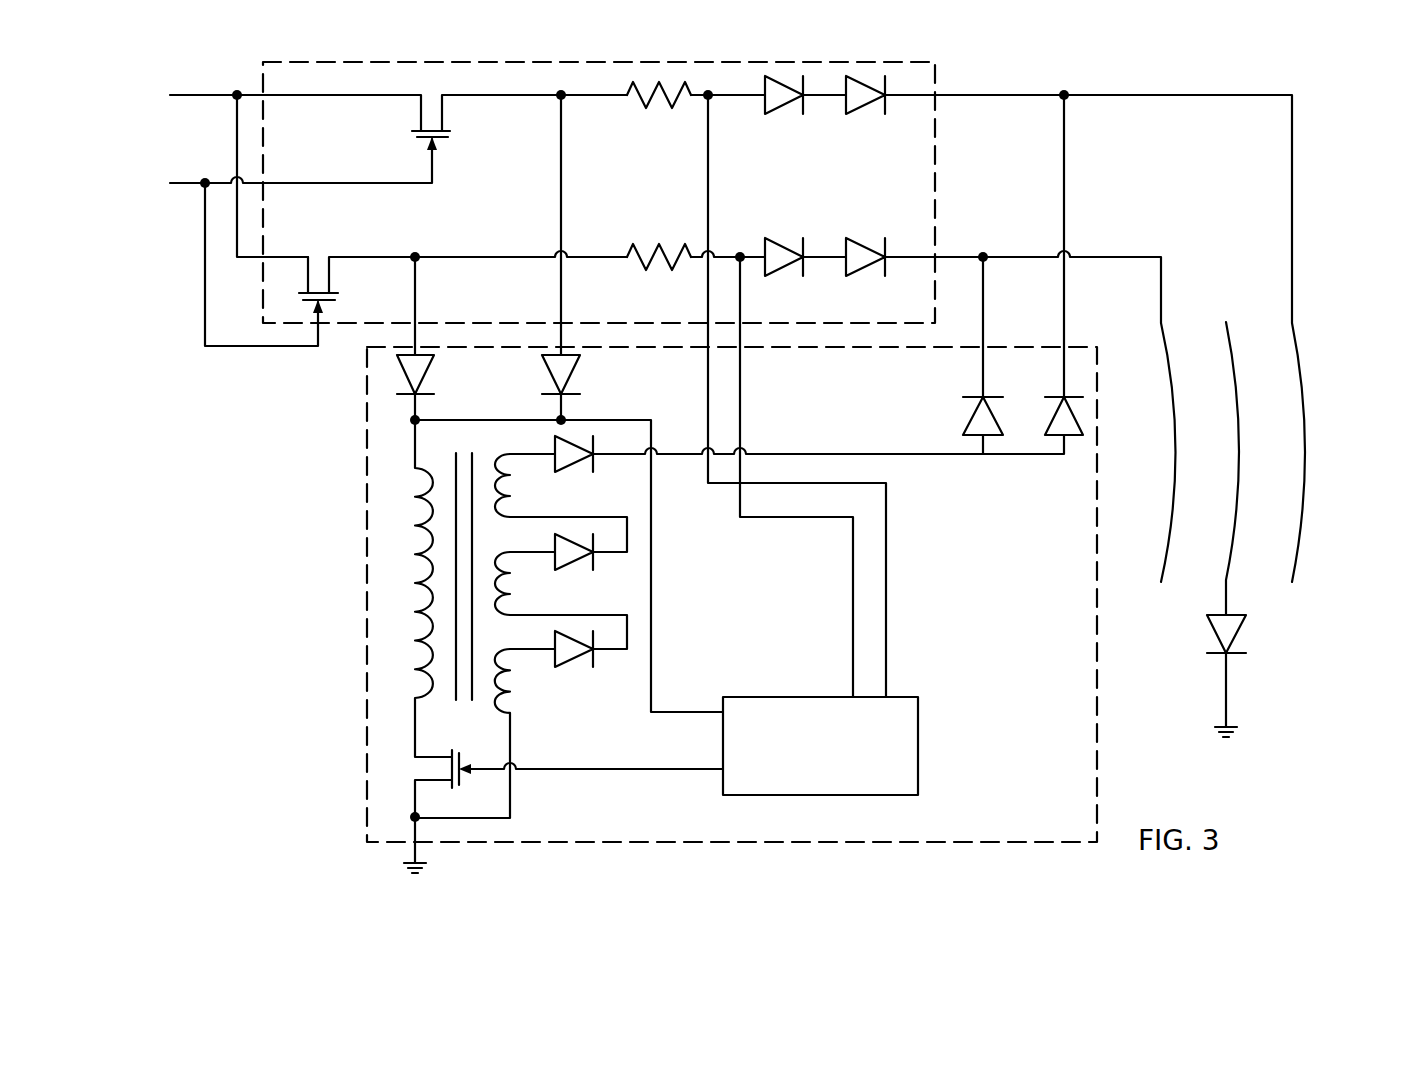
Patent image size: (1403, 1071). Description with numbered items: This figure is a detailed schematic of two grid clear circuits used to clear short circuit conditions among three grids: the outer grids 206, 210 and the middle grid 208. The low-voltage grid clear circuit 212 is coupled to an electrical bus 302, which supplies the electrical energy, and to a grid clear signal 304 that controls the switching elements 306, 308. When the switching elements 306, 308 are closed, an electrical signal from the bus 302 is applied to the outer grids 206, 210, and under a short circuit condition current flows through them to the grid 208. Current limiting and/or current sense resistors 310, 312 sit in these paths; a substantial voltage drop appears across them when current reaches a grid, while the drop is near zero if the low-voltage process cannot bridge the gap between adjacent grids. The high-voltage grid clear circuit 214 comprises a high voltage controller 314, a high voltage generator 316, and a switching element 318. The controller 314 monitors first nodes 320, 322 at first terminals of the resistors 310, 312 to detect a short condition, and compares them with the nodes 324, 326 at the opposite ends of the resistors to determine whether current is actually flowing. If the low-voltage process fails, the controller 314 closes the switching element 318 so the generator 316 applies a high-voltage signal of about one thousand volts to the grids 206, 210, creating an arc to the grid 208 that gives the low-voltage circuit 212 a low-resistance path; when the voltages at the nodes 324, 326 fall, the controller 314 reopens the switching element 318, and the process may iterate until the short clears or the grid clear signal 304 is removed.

The electrical bus 302 is at (172, 114).
The grid clear signal 304 is at (175, 206).
The switching element 306 is at (310, 267).
The switching element 308 is at (443, 104).
The current limiting and/or current sense resistor 310 is at (650, 246).
The current limiting and/or current sense resistor 312 is at (660, 107).
The high voltage controller 314 is at (918, 697).
The high voltage generator 316 is at (395, 463).
The switching element 318 is at (432, 755).
The first node 320 is at (418, 418).
The first node 322 is at (564, 418).
The node 324 is at (712, 100).
The node 326 is at (742, 254).
The low-voltage grid clear circuit 212 is at (940, 75).
The high-voltage grid clear circuit 214 is at (365, 386).
The grid 206 is at (1177, 460).
The grid 208 is at (1233, 552).
The grid 210 is at (1300, 542).